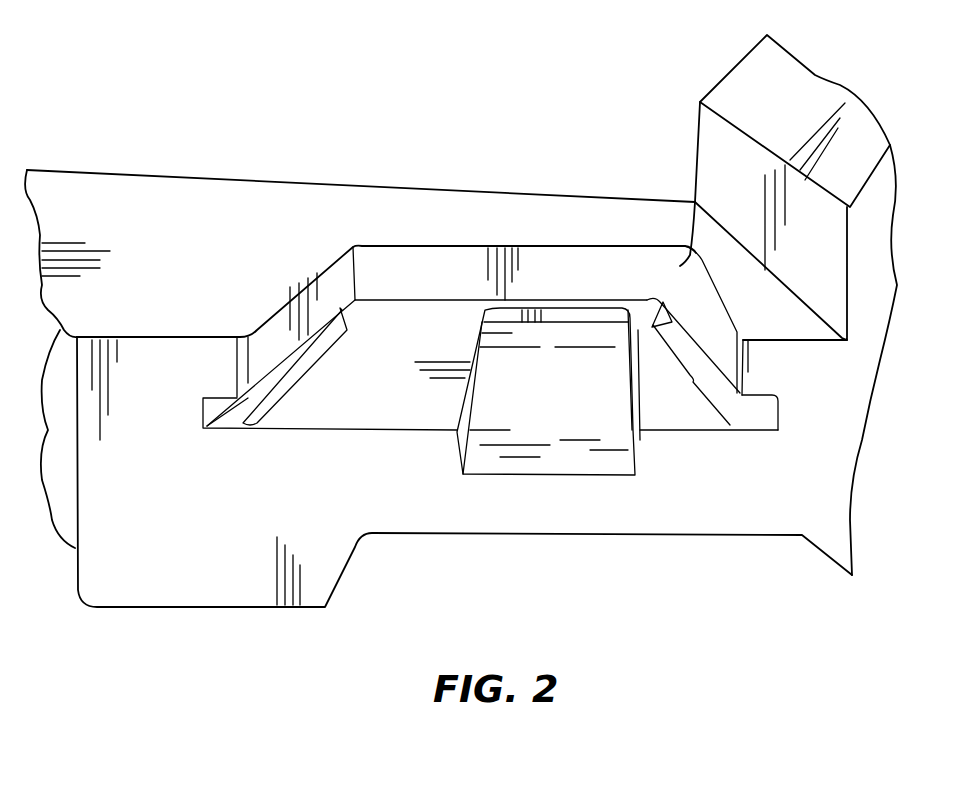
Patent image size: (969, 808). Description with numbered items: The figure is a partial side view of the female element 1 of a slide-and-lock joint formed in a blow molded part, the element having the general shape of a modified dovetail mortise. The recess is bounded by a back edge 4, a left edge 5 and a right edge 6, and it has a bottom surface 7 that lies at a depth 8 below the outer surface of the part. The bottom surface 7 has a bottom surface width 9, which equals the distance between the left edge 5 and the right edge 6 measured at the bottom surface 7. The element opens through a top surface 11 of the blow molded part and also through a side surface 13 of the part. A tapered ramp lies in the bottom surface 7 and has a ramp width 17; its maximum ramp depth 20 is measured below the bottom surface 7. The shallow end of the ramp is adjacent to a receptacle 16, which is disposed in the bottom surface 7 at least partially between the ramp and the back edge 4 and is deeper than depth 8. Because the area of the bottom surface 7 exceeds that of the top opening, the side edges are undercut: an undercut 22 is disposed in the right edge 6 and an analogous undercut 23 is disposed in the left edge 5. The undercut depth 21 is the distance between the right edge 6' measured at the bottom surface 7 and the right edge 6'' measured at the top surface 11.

The female element 1 is at (385, 227).
The back edge 4 is at (453, 243).
The left edge 5 is at (280, 300).
The right edge 6 is at (773, 187).
The right edge measured at bottom surface 6' is at (789, 411).
The right edge measured at top surface 6'' is at (781, 367).
The bottom surface 7 is at (641, 332).
The depth 8 is at (176, 338).
The bottom surface width 9 is at (205, 432).
The top surface 11 is at (170, 262).
The side surface 13 is at (171, 560).
The receptacle 16 is at (548, 307).
The ramp width 17 is at (628, 390).
The maximum ramp depth 20 is at (450, 474).
The undercut depth 21 is at (830, 302).
The undercut 22 is at (693, 382).
The undercut 23 is at (300, 364).